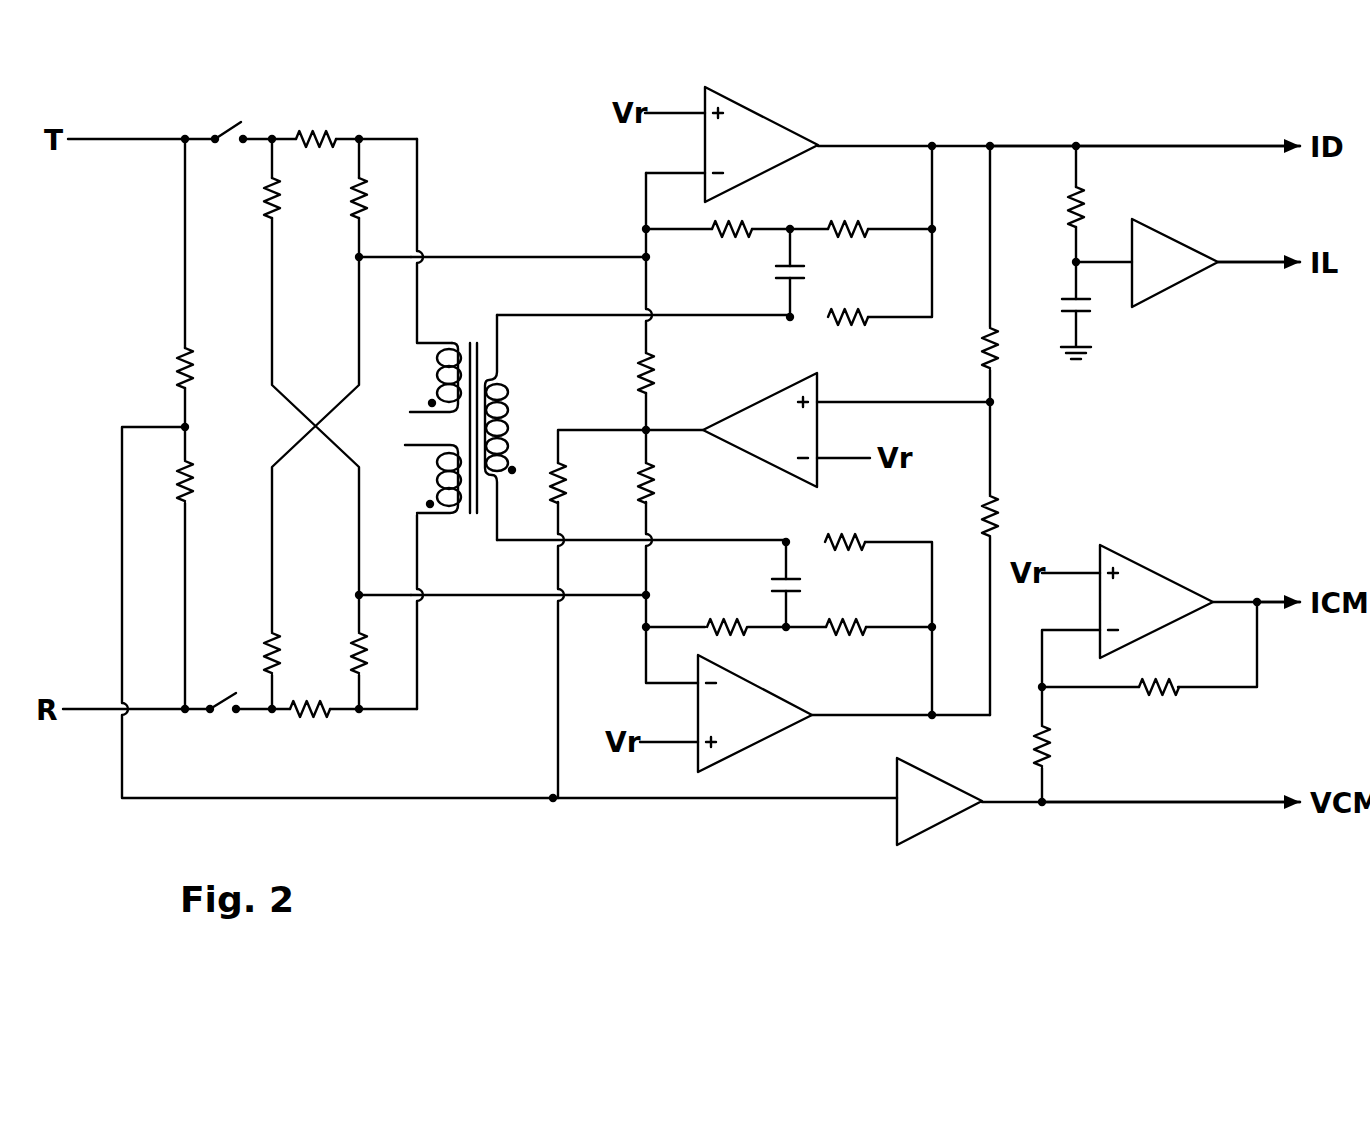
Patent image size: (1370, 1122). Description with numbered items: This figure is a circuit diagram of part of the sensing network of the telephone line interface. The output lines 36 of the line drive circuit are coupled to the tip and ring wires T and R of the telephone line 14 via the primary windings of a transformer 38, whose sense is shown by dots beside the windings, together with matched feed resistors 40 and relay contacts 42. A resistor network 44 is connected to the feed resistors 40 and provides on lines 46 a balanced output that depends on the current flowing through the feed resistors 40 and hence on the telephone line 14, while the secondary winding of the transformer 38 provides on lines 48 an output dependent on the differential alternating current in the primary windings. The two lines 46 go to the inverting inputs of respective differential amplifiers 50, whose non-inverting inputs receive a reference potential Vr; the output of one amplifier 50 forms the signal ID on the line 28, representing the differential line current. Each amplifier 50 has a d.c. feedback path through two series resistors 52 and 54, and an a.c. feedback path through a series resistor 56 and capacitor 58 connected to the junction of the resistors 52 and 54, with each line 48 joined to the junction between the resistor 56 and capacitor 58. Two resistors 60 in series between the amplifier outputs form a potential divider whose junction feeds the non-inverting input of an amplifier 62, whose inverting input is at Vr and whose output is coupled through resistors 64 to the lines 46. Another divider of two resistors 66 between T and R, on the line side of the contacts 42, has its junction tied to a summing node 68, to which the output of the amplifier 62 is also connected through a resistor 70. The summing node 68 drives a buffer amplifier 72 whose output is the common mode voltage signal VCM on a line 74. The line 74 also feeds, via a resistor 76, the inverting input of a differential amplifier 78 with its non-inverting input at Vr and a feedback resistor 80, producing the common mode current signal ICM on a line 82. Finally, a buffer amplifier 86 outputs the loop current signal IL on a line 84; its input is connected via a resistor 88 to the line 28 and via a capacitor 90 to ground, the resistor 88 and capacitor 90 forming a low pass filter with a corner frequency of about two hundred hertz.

The telephone line 14 is at (95, 138).
The relay contacts 42 is at (228, 130).
The feed resistors 40 is at (320, 130).
The resistor network 44 is at (326, 261).
The resistors 66 is at (196, 372).
The output lines 36 is at (408, 445).
The transformer 38 is at (470, 520).
The lines 46 is at (560, 256).
The lines 48 is at (560, 315).
The differential amplifiers 50 is at (776, 138).
The resistor 52 is at (846, 228).
The resistor 54 is at (744, 228).
The resistor 56 is at (848, 316).
The capacitor 58 is at (778, 268).
The resistors 60 is at (1003, 365).
The amplifier 62 is at (770, 402).
The resistors 64 is at (632, 368).
The resistor 70 is at (575, 478).
The summing node 68 is at (553, 797).
The line 28 is at (1190, 146).
The resistor 88 is at (1066, 222).
The capacitor 90 is at (1066, 314).
The buffer amplifier 86 is at (1172, 273).
The line 84 is at (1262, 262).
The buffer amplifier 72 is at (935, 796).
The differential amplifier 78 is at (1165, 618).
The line 82 is at (1270, 600).
The feedback resistor 80 is at (1160, 708).
The resistor 76 is at (1052, 742).
The line 74 is at (1203, 802).